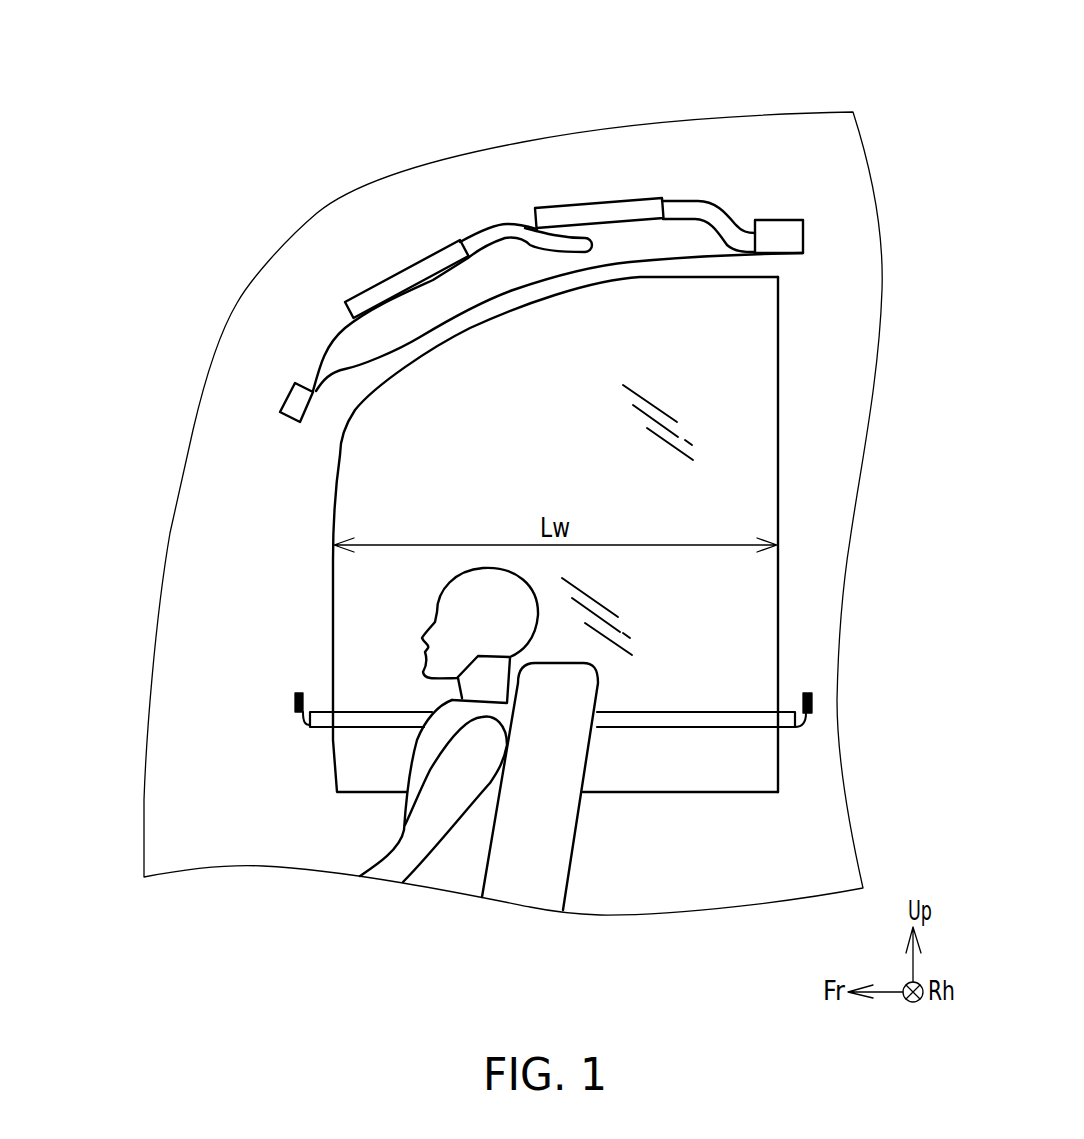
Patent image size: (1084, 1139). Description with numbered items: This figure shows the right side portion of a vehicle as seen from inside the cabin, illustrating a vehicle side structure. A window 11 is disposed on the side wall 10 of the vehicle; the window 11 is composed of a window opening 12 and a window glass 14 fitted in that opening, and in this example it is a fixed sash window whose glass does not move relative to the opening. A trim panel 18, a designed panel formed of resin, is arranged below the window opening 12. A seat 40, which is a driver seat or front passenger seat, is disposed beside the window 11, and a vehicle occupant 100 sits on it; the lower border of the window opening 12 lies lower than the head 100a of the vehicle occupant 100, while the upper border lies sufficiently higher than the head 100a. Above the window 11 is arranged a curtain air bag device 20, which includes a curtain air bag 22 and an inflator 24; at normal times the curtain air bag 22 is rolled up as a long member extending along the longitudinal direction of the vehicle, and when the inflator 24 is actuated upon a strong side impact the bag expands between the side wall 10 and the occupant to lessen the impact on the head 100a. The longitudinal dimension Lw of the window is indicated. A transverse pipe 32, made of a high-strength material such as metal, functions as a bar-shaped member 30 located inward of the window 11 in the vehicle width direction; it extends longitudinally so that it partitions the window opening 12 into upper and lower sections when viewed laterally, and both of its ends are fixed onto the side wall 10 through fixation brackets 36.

The side wall 10 is at (232, 522).
The window 11 is at (778, 457).
The window opening 12 is at (778, 328).
The window glass 14 is at (526, 453).
The trim panel 18 is at (640, 840).
The curtain air bag device 20 is at (675, 180).
The curtain air bag 22 is at (773, 230).
The inflator 24 is at (433, 262).
The bar-shaped member 30 is at (554, 844).
The transverse pipe 32 is at (717, 727).
The fixation brackets 36 is at (293, 699).
The seat 40 is at (572, 857).
The vehicle occupant 100 is at (407, 808).
The head 100a is at (462, 568).